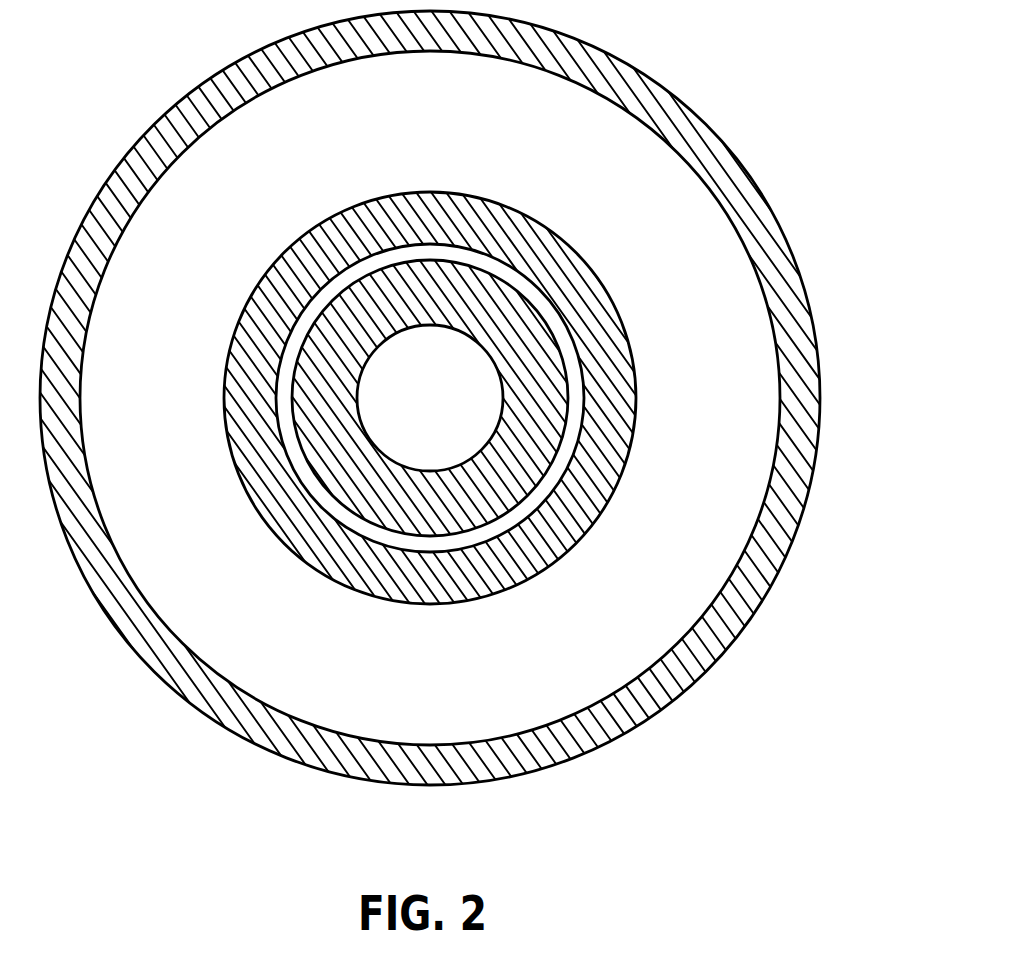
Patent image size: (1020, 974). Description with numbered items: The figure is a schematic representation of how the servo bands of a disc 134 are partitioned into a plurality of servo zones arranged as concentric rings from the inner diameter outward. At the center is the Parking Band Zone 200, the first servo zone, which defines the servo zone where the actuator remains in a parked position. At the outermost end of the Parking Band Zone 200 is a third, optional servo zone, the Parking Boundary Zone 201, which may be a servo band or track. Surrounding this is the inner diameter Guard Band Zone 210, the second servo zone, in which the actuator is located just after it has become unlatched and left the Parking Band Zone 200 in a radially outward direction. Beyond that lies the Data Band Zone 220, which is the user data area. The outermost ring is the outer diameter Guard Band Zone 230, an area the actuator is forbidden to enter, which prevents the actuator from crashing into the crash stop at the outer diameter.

The disc 134 is at (727, 83).
The Parking Band Zone 200 is at (503, 298).
The Parking Boundary Zone 201 is at (565, 337).
The inner diameter Guard Band Zone 210 is at (293, 522).
The Data Band Zone 220 is at (203, 642).
The outer diameter Guard Band Zone 230 is at (775, 255).